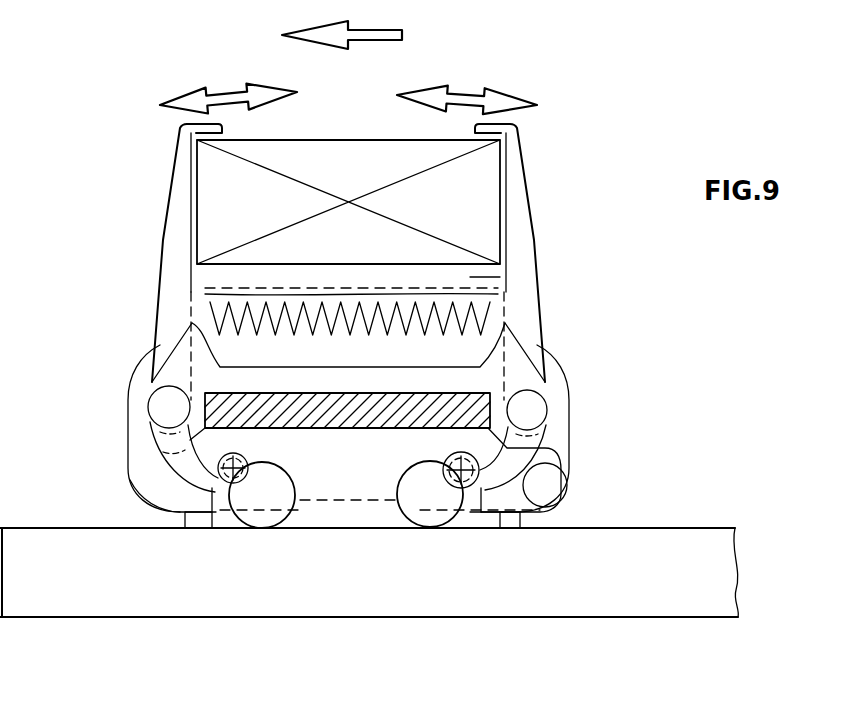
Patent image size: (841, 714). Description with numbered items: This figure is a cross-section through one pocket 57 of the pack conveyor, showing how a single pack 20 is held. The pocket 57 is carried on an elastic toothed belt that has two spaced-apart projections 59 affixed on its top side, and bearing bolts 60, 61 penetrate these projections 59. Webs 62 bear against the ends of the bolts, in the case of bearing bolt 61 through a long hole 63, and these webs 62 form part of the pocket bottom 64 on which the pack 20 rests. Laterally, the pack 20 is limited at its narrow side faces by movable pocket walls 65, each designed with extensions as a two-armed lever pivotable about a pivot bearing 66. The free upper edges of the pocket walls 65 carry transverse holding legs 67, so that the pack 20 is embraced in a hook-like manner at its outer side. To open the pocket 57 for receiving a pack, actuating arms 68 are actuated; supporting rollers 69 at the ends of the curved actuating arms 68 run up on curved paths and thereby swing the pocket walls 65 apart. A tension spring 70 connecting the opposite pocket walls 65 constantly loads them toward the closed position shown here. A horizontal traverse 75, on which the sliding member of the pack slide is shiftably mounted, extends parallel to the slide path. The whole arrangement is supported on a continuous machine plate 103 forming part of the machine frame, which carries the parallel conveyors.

The pack 20 is at (350, 158).
The pocket 57 is at (556, 141).
The projections 59 is at (195, 520).
The bearing bolt 60 is at (218, 483).
The bearing bolt 61 is at (483, 515).
The webs 62 is at (360, 500).
The long hole 63 is at (562, 484).
The pocket bottom 64 is at (508, 265).
The pocket walls 65 is at (178, 178).
The pivot bearing 66 is at (163, 410).
The holding legs 67 is at (212, 122).
The actuating arms 68 is at (212, 520).
The supporting rollers 69 is at (265, 528).
The tension spring 70 is at (490, 312).
The traverse 75 is at (350, 430).
The machine plate 103 is at (700, 553).